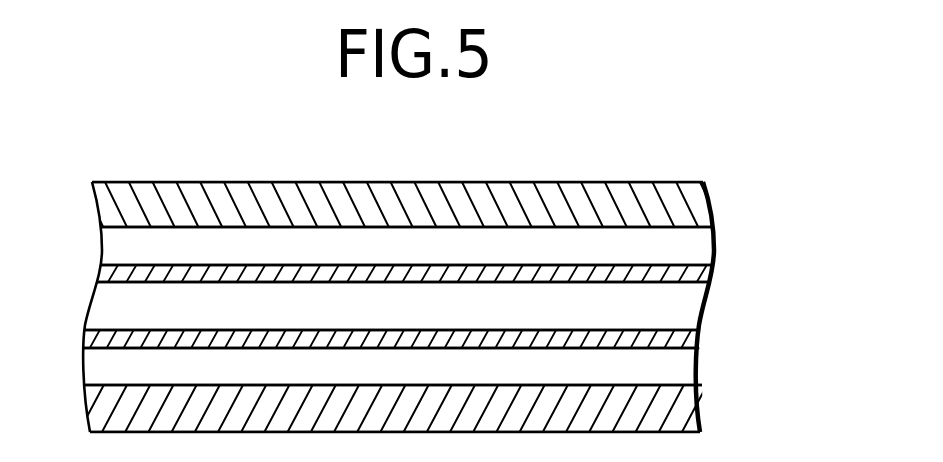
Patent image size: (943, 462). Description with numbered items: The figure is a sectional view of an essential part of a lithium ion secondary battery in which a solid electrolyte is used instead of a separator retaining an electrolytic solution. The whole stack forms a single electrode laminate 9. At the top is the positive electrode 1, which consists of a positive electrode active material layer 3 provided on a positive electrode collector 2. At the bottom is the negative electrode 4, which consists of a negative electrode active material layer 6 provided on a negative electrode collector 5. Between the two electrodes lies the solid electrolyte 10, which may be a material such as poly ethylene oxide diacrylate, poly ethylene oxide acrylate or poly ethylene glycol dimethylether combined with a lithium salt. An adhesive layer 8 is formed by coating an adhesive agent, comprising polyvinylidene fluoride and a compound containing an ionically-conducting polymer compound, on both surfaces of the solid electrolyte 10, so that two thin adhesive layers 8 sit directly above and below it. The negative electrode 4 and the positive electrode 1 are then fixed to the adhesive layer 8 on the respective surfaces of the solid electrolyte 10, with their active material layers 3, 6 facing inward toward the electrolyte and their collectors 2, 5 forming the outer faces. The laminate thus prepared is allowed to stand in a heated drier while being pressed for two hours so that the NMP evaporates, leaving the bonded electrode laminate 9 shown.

The positive electrode 1 is at (758, 180).
The positive electrode collector 2 is at (703, 203).
The positive electrode active material layer 3 is at (703, 250).
The negative electrode 4 is at (748, 347).
The negative electrode collector 5 is at (688, 418).
The negative electrode active material layer 6 is at (687, 368).
The adhesive resin layer 8 is at (713, 272).
The electrode laminate 9 is at (60, 180).
The solid electrolyte 10 is at (693, 305).